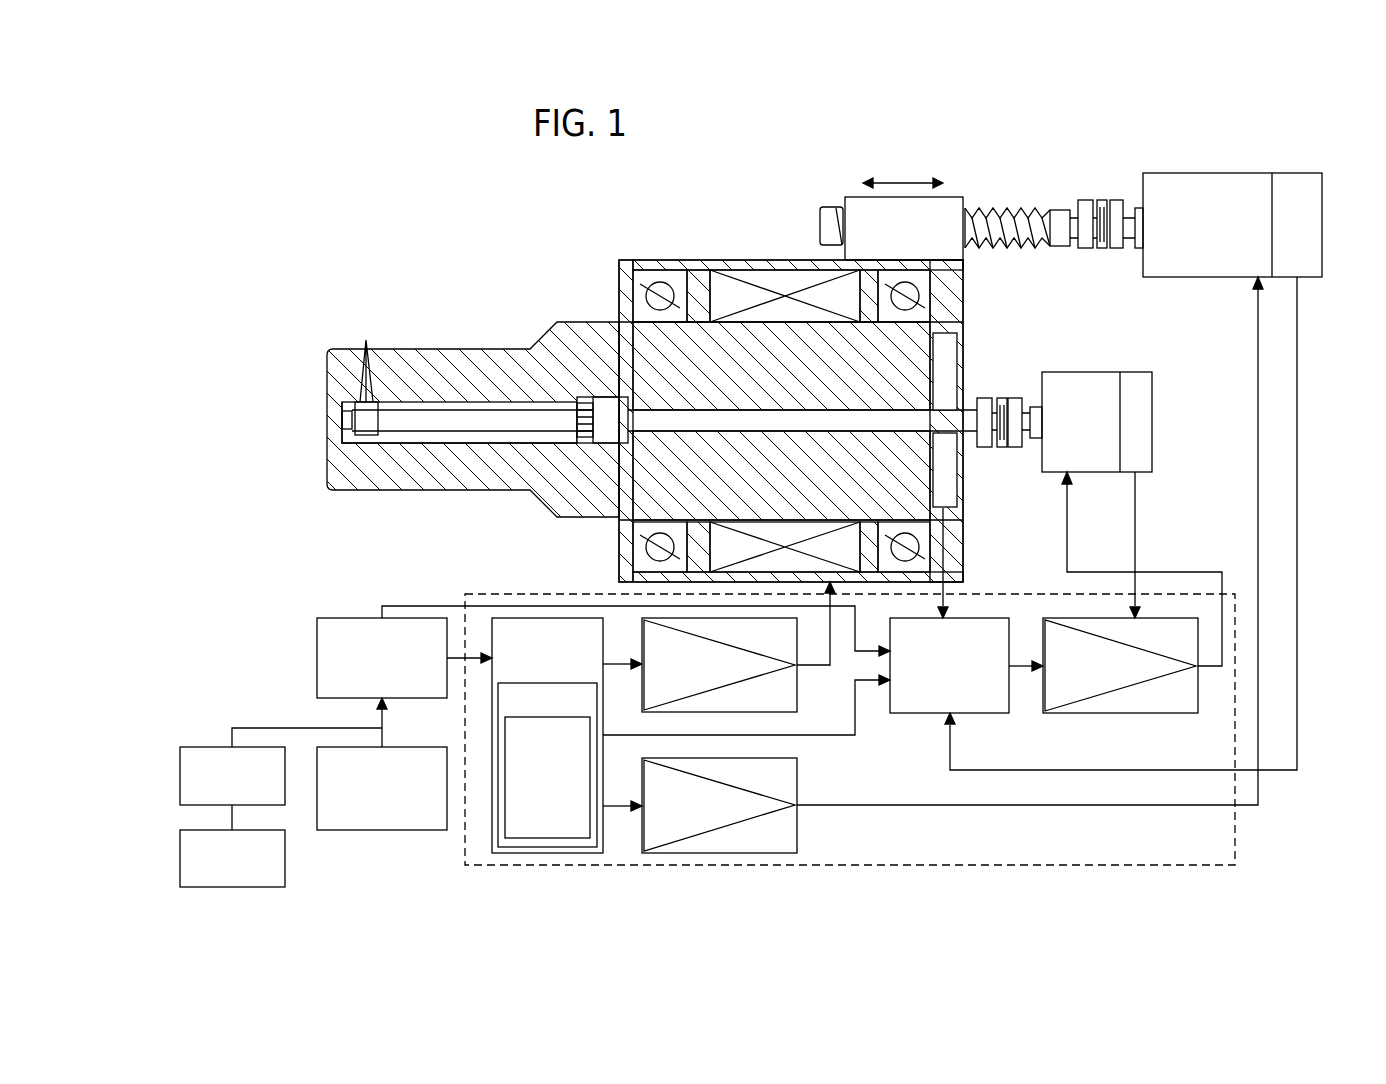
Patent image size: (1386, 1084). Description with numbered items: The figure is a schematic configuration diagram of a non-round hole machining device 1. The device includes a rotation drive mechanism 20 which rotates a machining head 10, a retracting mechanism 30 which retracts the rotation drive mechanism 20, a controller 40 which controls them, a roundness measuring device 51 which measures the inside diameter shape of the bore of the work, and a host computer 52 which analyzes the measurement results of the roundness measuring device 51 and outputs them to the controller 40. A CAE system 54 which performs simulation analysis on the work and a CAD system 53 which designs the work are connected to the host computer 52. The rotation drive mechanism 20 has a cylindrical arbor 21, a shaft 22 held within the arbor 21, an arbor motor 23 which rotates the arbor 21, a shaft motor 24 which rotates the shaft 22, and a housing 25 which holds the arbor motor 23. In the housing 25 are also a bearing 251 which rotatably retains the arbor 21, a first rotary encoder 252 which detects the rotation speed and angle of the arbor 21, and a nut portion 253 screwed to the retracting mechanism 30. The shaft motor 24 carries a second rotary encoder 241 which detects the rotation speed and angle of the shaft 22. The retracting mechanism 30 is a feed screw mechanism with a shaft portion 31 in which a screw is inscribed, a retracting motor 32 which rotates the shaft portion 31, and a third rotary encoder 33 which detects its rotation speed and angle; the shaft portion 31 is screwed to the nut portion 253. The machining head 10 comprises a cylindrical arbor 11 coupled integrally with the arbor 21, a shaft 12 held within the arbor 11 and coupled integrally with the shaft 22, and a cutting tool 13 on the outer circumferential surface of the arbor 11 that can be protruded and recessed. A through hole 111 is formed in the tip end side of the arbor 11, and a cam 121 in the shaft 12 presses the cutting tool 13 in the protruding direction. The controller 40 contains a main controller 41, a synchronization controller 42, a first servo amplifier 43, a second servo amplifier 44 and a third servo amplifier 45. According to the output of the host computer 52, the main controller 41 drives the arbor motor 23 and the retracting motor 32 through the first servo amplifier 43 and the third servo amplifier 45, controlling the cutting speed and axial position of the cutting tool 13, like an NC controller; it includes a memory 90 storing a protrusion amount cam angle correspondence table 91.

The non-round hole machining device 1 is at (850, 152).
The machining head 10 is at (416, 333).
The cylindrical arbor 11 is at (557, 344).
The through hole 111 is at (348, 362).
The shaft 12 is at (558, 417).
The cam 121 is at (342, 413).
The cutting tool 13 is at (366, 355).
The rotation drive mechanism 20 is at (755, 200).
The cylindrical arbor 21 is at (705, 340).
The shaft 22 is at (626, 395).
The arbor motor 23 is at (775, 270).
The shaft motor 24 is at (1077, 372).
The second rotary encoder 241 is at (1137, 372).
The housing 25 is at (960, 305).
The bearing 251 is at (660, 290).
The first rotary encoder 252 is at (960, 492).
The nut portion 253 is at (950, 197).
The retracting mechanism 30 is at (1072, 173).
The shaft portion 31 is at (1012, 210).
The retracting motor 32 is at (1210, 178).
The third rotary encoder 33 is at (1298, 178).
The controller 40 is at (538, 593).
The main controller 41 is at (586, 618).
The synchronization controller 42 is at (990, 713).
The first servo amplifier 43 is at (800, 705).
The second servo amplifier 44 is at (1115, 713).
The third servo amplifier 45 is at (800, 795).
The roundness measuring device 51 is at (409, 830).
The host computer 52 is at (317, 636).
The CAD system 53 is at (285, 857).
The CAE system 54 is at (209, 747).
The memory 90 is at (506, 847).
The protrusion amount cam angle correspondence table 91 is at (581, 838).